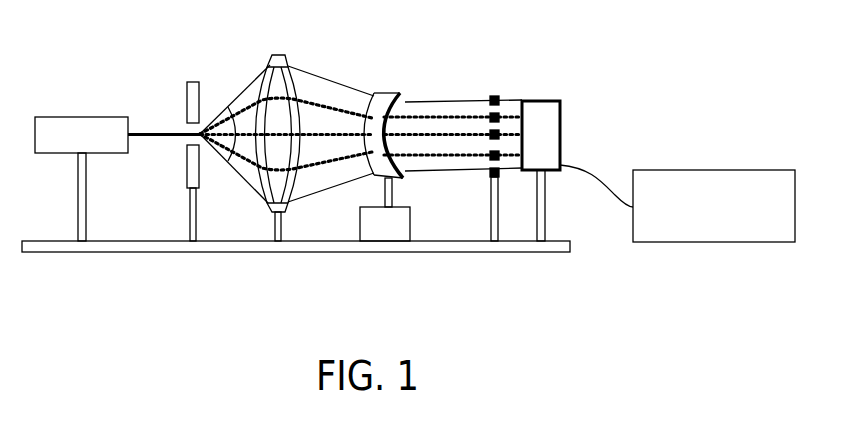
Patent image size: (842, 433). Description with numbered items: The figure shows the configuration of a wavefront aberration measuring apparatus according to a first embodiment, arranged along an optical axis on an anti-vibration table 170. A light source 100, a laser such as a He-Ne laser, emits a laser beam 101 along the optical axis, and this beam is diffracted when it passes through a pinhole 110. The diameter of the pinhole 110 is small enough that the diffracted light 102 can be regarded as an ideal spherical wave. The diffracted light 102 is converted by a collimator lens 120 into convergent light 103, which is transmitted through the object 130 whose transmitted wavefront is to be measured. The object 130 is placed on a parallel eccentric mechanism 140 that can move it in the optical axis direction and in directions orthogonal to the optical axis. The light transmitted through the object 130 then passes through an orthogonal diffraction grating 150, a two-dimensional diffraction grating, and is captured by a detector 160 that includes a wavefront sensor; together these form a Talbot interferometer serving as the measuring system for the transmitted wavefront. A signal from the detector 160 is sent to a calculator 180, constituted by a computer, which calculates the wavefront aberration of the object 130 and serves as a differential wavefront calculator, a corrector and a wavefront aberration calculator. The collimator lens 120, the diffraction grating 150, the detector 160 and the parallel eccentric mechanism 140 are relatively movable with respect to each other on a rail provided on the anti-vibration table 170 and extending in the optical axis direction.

The light source 100 is at (56, 117).
The laser beam 101 is at (152, 137).
The diffracted light 102 is at (230, 155).
The convergent light 103 is at (322, 168).
The pinhole 110 is at (192, 82).
The collimator lens 120 is at (278, 54).
The object 130 is at (398, 96).
The parallel eccentric mechanism 140 is at (392, 230).
The orthogonal diffraction grating 150 is at (496, 96).
The detector 160 is at (560, 121).
The anti-vibration table 170 is at (570, 244).
The calculator 180 is at (658, 170).